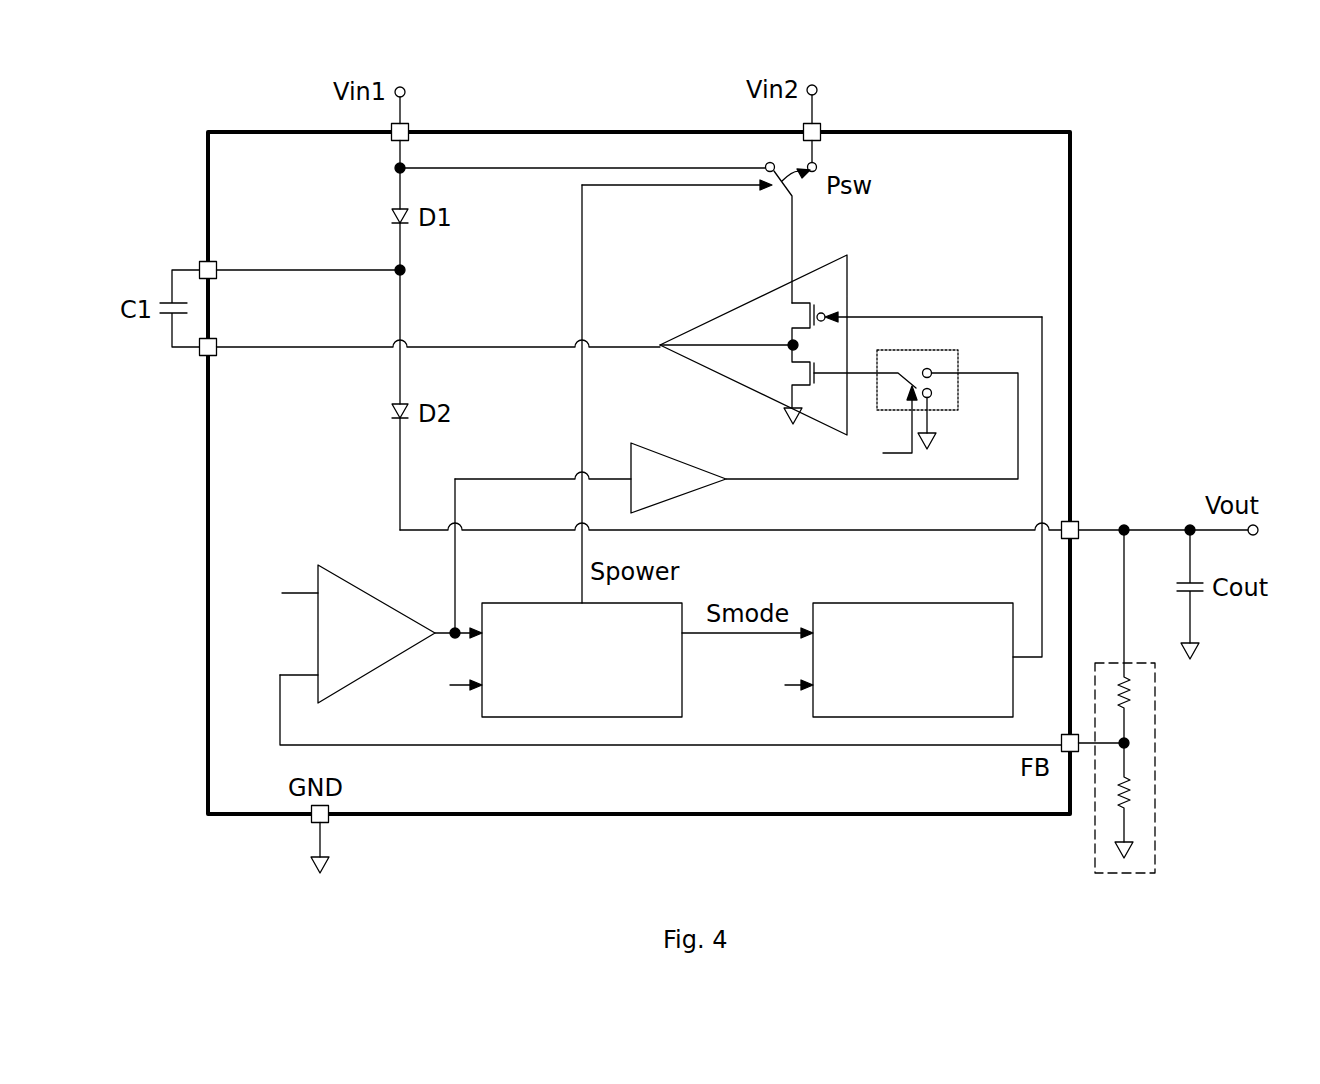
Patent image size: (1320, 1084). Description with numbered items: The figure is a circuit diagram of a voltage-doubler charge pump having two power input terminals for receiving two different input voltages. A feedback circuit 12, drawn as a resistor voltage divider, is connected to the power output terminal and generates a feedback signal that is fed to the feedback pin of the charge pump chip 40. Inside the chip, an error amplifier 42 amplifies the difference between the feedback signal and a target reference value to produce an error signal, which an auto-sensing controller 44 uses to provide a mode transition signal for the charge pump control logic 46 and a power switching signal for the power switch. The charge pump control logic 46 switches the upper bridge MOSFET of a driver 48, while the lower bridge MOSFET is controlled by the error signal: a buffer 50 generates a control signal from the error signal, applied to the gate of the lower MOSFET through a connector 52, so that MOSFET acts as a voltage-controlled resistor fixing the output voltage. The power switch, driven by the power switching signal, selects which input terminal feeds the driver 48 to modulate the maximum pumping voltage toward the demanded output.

The charge pump chip 40 is at (1070, 340).
The error amplifier 42 is at (383, 598).
The auto-sensing controller 44 is at (537, 603).
The charge pump control logic 46 is at (912, 603).
The driver 48 is at (755, 300).
The buffer 50 is at (684, 462).
The connector 52 is at (915, 350).
The feedback circuit 12 is at (1155, 745).